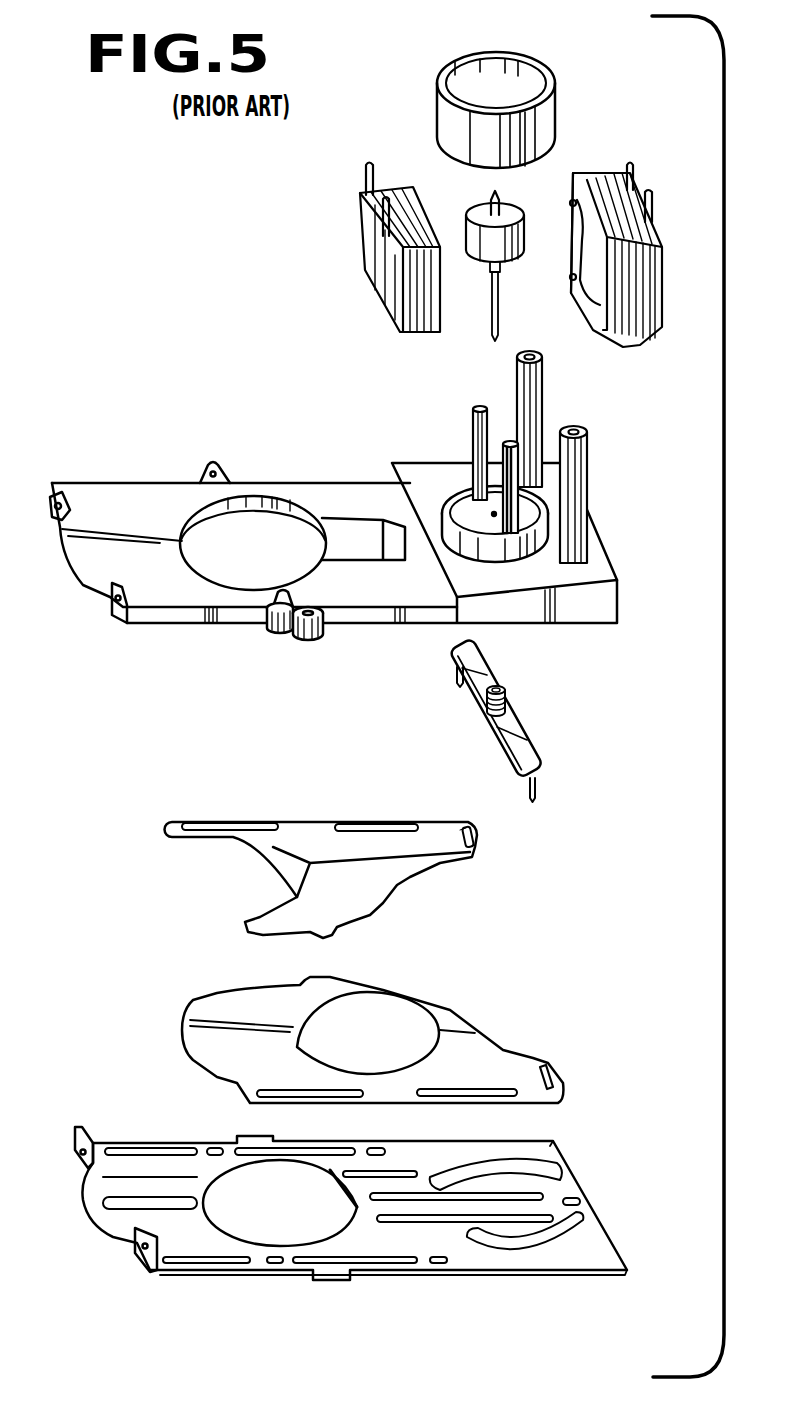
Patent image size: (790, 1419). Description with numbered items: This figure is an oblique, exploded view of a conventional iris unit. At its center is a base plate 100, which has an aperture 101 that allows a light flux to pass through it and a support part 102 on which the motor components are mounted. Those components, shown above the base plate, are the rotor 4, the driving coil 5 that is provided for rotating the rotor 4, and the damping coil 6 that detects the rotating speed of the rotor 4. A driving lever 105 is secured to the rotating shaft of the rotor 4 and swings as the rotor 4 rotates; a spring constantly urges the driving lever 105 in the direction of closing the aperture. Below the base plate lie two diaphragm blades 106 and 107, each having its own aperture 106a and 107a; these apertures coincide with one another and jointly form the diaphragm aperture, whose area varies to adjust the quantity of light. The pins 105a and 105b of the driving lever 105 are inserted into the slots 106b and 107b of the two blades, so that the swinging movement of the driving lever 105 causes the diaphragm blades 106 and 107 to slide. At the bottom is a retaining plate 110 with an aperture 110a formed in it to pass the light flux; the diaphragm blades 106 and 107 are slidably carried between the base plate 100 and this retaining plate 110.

The rotor 4 is at (480, 242).
The driving coil 5 is at (377, 190).
The damping coil 6 is at (610, 195).
The base plate 100 is at (348, 519).
The aperture 101 is at (292, 525).
The support part 102 is at (528, 513).
The driving lever 105 is at (495, 722).
The pin 105a is at (452, 668).
The pin 105b is at (537, 793).
The diaphragm blade 106 is at (359, 850).
The aperture 106a is at (222, 838).
The slot 106b is at (477, 837).
The diaphragm blade 107 is at (380, 1015).
The aperture 107a is at (400, 1010).
The slot 107b is at (553, 1063).
The retaining plate 110 is at (351, 1224).
The aperture 110a is at (240, 1222).